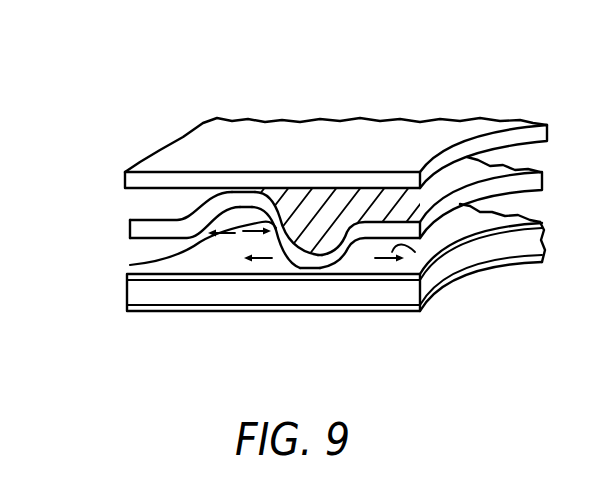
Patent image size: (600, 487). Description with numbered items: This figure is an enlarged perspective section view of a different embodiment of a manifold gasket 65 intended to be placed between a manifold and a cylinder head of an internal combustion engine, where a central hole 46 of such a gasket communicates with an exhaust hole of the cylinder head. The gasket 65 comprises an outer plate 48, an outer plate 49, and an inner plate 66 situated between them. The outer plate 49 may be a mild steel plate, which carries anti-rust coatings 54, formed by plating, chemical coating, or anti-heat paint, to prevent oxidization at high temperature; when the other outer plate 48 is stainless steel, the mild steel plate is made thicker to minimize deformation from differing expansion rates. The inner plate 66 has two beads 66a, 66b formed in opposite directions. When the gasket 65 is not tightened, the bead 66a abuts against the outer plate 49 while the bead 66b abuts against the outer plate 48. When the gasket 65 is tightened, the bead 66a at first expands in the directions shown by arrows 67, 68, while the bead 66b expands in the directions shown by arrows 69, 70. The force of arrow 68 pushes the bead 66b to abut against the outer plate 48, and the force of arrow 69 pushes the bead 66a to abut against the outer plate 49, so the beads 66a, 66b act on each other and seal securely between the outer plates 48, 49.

The central hole 46 is at (486, 340).
The outer plate 48 is at (160, 180).
The outer plate 49 is at (285, 298).
The coating 54 is at (273, 274).
The manifold gasket 65 is at (466, 79).
The inner plate 66 is at (284, 216).
The bead 66a is at (333, 265).
The bead 66b is at (244, 196).
The arrow 67 is at (415, 252).
The arrow 68 is at (295, 277).
The arrow 69 is at (235, 240).
The arrow 70 is at (130, 265).